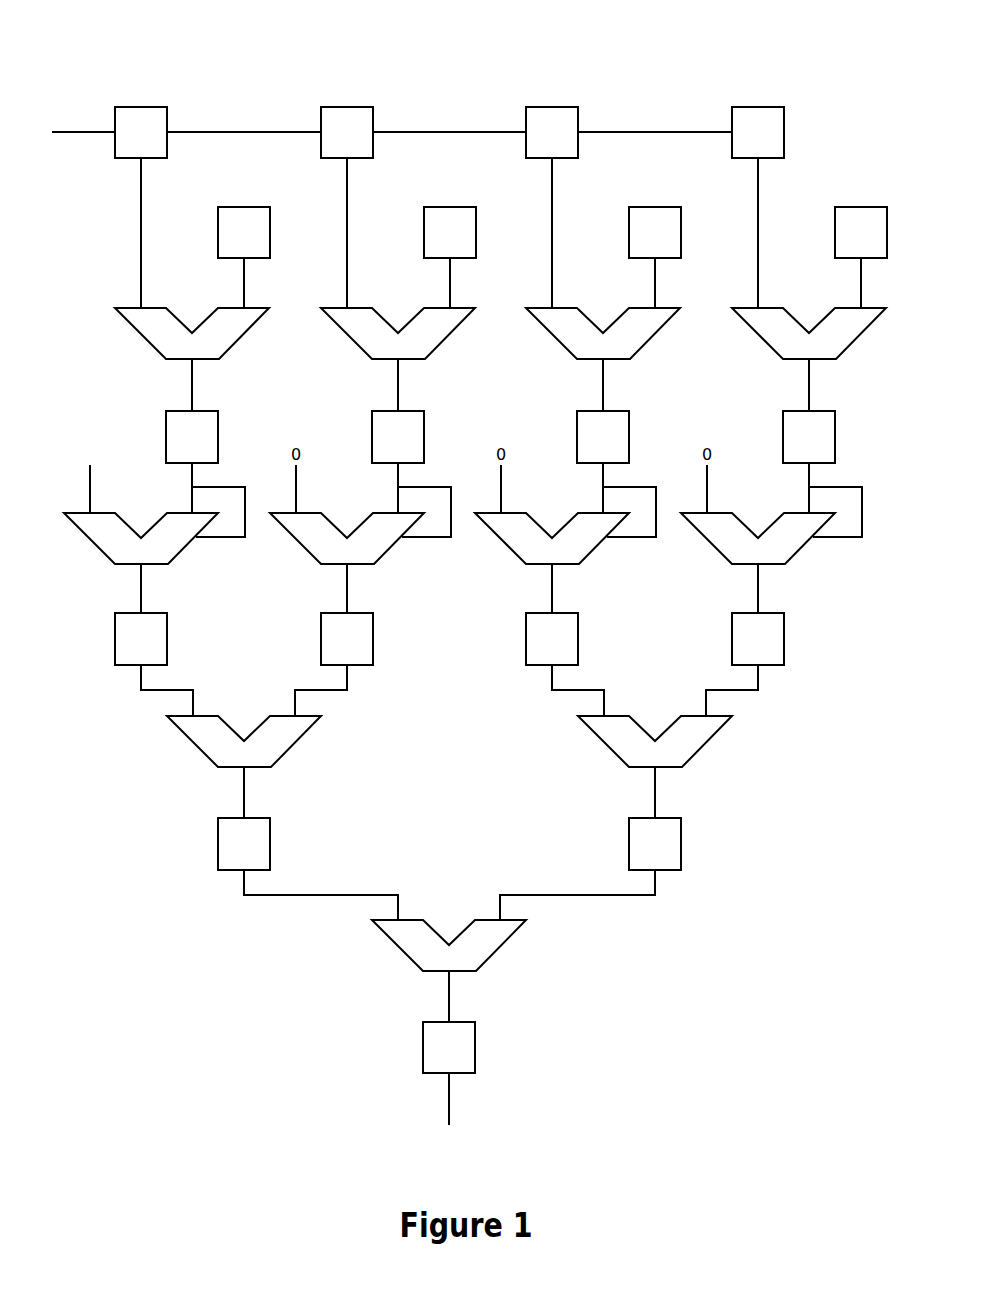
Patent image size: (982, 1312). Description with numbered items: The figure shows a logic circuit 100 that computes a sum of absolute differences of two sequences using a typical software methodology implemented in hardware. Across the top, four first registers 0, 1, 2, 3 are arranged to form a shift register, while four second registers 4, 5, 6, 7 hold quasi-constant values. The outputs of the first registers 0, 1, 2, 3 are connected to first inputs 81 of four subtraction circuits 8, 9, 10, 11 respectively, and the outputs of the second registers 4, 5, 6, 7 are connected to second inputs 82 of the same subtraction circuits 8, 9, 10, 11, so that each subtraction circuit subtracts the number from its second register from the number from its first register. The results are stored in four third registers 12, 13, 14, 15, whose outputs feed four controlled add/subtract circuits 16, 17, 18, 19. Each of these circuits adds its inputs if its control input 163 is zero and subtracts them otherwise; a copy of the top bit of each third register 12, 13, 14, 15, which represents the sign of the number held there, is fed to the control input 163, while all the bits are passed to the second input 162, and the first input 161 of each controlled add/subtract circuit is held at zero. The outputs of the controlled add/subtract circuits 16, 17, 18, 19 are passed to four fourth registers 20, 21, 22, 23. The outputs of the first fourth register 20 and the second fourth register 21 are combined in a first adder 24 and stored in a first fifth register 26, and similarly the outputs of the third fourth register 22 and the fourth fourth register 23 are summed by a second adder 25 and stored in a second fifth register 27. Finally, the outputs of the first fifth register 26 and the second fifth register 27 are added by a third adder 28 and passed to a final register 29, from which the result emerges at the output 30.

The logic circuit 100 is at (86, 46).
The first register 0 is at (141, 132).
The first register 1 is at (347, 132).
The first register 2 is at (552, 132).
The first register 3 is at (758, 132).
The second register 4 is at (244, 232).
The second register 5 is at (450, 232).
The second register 6 is at (655, 232).
The second register 7 is at (861, 232).
The subtraction circuit 8 is at (192, 334).
The subtraction circuit 9 is at (398, 334).
The subtraction circuit 10 is at (603, 334).
The subtraction circuit 11 is at (809, 334).
The third register 12 is at (192, 437).
The third register 13 is at (398, 437).
The third register 14 is at (603, 437).
The third register 15 is at (809, 437).
The controlled add/subtract circuit 16 is at (141, 539).
The controlled add/subtract circuit 17 is at (347, 539).
The controlled add/subtract circuit 18 is at (552, 539).
The controlled add/subtract circuit 19 is at (758, 539).
The fourth register 20 is at (141, 639).
The fourth register 21 is at (347, 639).
The fourth register 22 is at (552, 639).
The fourth register 23 is at (758, 639).
The first adder 24 is at (244, 742).
The second adder 25 is at (655, 742).
The first fifth register 26 is at (244, 844).
The second fifth register 27 is at (655, 844).
The third adder 28 is at (449, 946).
The final register 29 is at (449, 1047).
The output 30 is at (435, 1099).
The first input 81 is at (130, 233).
The second input 82 is at (233, 283).
The first input 161 is at (74, 479).
The second input 162 is at (174, 488).
The control input 163 is at (218, 525).